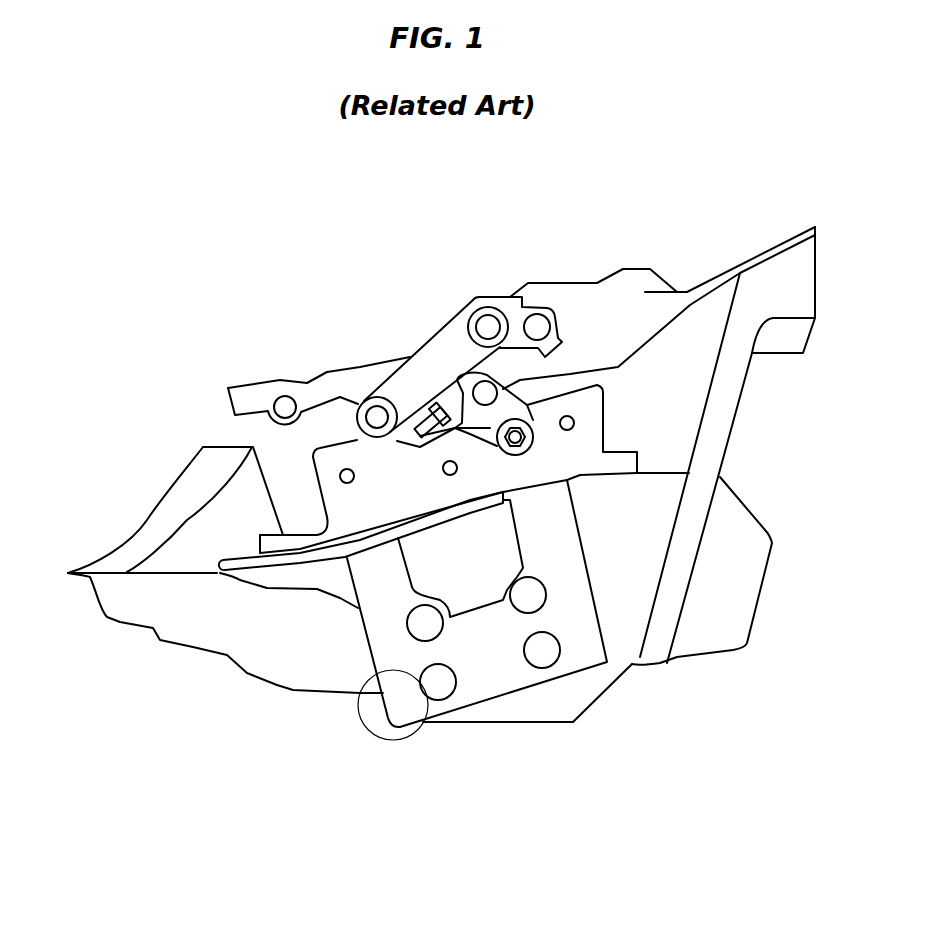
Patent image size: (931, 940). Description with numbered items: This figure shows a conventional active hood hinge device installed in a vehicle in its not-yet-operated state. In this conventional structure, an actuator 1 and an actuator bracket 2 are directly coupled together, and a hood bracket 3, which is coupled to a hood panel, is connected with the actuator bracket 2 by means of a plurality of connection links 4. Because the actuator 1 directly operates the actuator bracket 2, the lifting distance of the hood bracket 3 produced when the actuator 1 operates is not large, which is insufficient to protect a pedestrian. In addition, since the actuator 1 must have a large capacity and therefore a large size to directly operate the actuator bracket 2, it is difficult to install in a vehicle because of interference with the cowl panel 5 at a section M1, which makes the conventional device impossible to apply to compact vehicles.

The actuator 1 is at (493, 667).
The actuator bracket 2 is at (390, 458).
The hood bracket 3 is at (317, 390).
The connection links 4 is at (498, 357).
The cowl panel 5 is at (278, 670).
The section M1 is at (378, 740).